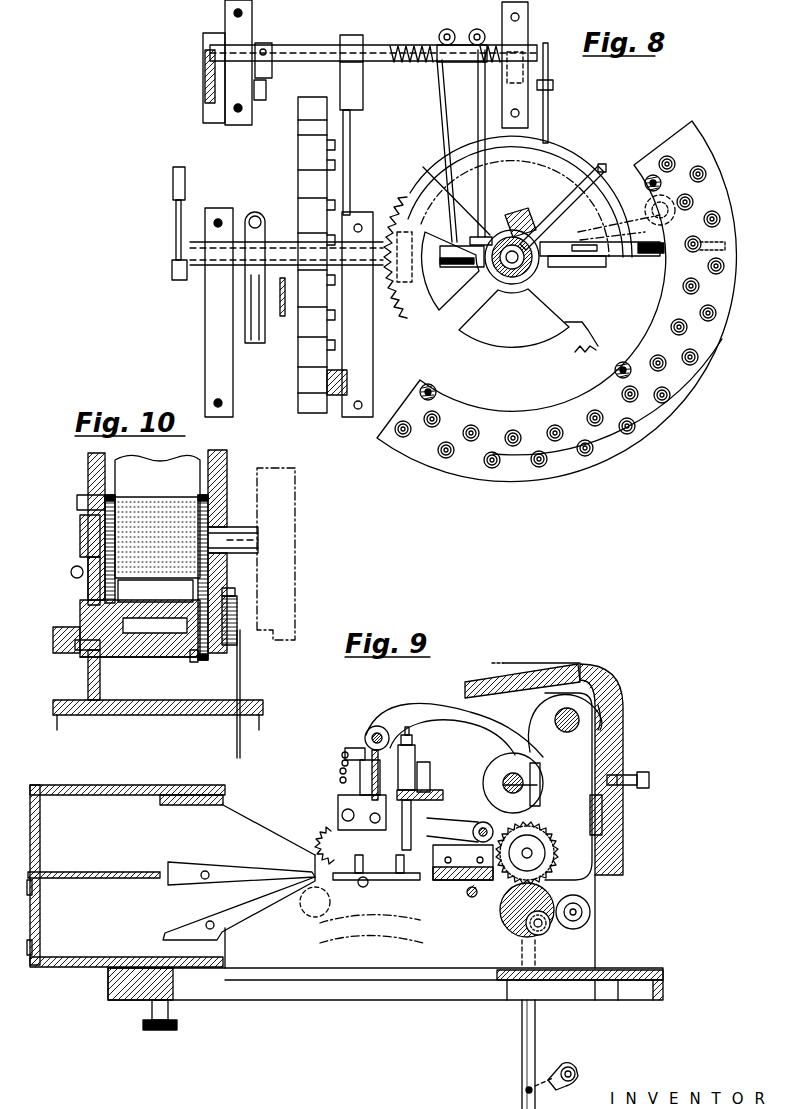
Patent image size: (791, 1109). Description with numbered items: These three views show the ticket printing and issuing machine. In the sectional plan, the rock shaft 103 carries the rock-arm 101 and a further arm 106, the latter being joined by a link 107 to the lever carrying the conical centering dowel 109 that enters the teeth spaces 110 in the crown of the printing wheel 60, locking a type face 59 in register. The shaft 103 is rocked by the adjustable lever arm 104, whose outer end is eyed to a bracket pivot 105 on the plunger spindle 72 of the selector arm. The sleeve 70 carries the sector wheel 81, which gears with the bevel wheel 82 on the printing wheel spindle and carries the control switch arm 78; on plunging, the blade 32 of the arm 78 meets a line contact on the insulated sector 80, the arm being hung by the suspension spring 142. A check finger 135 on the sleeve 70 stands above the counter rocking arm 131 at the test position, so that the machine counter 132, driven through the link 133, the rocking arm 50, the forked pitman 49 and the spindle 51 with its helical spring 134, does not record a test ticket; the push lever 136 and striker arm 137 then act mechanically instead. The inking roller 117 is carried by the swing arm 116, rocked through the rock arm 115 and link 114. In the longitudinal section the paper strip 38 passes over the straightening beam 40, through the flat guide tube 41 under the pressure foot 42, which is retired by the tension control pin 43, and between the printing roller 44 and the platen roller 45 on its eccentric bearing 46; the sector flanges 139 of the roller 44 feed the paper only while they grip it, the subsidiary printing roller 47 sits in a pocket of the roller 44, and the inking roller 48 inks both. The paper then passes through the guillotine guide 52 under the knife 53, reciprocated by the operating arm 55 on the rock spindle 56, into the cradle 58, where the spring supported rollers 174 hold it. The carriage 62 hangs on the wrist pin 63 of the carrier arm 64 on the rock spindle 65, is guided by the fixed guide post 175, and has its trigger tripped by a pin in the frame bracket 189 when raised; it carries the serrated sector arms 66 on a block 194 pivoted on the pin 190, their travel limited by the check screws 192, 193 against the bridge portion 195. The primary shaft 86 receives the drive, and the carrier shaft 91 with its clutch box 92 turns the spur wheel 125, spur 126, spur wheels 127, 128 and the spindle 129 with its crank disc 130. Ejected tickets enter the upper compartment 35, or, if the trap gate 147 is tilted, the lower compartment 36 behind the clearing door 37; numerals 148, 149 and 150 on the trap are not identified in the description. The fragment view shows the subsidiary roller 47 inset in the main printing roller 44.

In FIG. 8, the rock shaft 103 is at (305, 43).
In FIG. 8, the rocking arm 50 is at (272, 68).
In FIG. 9, the rocking arm 50 is at (556, 1084).
In FIG. 8, the forked pitman 49 is at (262, 94).
In FIG. 10, the forked pitman 49 is at (242, 660).
In FIG. 9, the forked pitman 49 is at (537, 1025).
In FIG. 8, the rock-arm 101 is at (207, 124).
In FIG. 8, the arm 106 is at (352, 86).
In FIG. 8, the link 107 is at (353, 175).
In FIG. 8, the helical spring 134 is at (408, 63).
In FIG. 8, the spindle 51 is at (472, 63).
In FIG. 9, the spindle 51 is at (580, 1073).
In FIG. 8, the machine counter 132 is at (498, 79).
In FIG. 8, the counter rocking arm 131 is at (549, 121).
In FIG. 8, the link 133 is at (550, 91).
In FIG. 8, the adjustable lever arm 104 is at (486, 160).
In FIG. 8, the type face 59 is at (300, 192).
In FIG. 8, the teeth spaces 110 is at (337, 157).
In FIG. 8, the conical centering dowel 109 is at (300, 341).
In FIG. 8, the printing wheel 60 is at (298, 380).
In FIG. 9, the printing wheel 60 is at (322, 938).
In FIG. 8, the link 114 is at (250, 283).
In FIG. 8, the rock arm 115 is at (262, 292).
In FIG. 8, the swing arm 116 is at (278, 298).
In FIG. 8, the push lever 136 is at (174, 199).
In FIG. 8, the striker arm 137 is at (178, 271).
In FIG. 8, the plunger spindle 72 is at (504, 289).
In FIG. 8, the bevel wheel 82 is at (395, 321).
In FIG. 8, the sleeve 70 is at (515, 238).
In FIG. 8, the bracket pivot 105 is at (463, 267).
In FIG. 8, the control switch arm 78 is at (616, 259).
In FIG. 8, the check finger 135 is at (604, 170).
In FIG. 8, the suspension spring 142 is at (601, 250).
In FIG. 8, the blade 32 is at (700, 259).
In FIG. 8, the sector wheel 81 is at (583, 331).
In FIG. 8, the insulated sector 80 is at (681, 394).
In FIG. 10, the spur wheel 128 is at (116, 488).
In FIG. 10, the platen roller 45 is at (165, 505).
In FIG. 9, the platen roller 45 is at (546, 820).
In FIG. 10, the spur wheel 125 is at (214, 509).
In FIG. 10, the carrier shaft 91 is at (245, 528).
In FIG. 10, the clutch box 92 is at (258, 542).
In FIG. 10, the sector flange edges 139 is at (195, 593).
In FIG. 10, the printing roller 44 is at (202, 599).
In FIG. 9, the printing roller 44 is at (500, 928).
In FIG. 10, the adjustable crank disc 130 is at (237, 603).
In FIG. 10, the spindle 129 is at (237, 614).
In FIG. 10, the spur wheel 127 is at (108, 660).
In FIG. 10, the subsidiary printing roller 47 is at (166, 660).
In FIG. 9, the subsidiary printing roller 47 is at (543, 938).
In FIG. 10, the spur 126 is at (200, 668).
In FIG. 9, the upper compartment 35 is at (126, 875).
In FIG. 9, the lower compartment 36 is at (127, 936).
In FIG. 9, the clearing door 37 is at (40, 917).
In FIG. 9, the edge 148 is at (269, 841).
In FIG. 9, the trap gate 147 is at (241, 864).
In FIG. 9, the pin 150 is at (205, 871).
In FIG. 9, the lever 149 is at (242, 910).
In FIG. 9, the inking roller 117 is at (385, 973).
In FIG. 9, the serrated edged sector arms 66 is at (312, 842).
In FIG. 9, the strip 38 is at (536, 661).
In FIG. 9, the straightening beam 40 is at (584, 803).
In FIG. 9, the flat guide tube 41 is at (624, 721).
In FIG. 9, the tension control pin 43 is at (640, 773).
In FIG. 9, the pressure foot 42 is at (603, 827).
In FIG. 9, the frame bracket 189 is at (430, 790).
In FIG. 9, the oscillating carrier arm 64 is at (422, 708).
In FIG. 9, the wrist pin 63 is at (366, 735).
In FIG. 9, the rock spindle 65 is at (542, 775).
In FIG. 9, the primary shaft 86 is at (554, 720).
In FIG. 9, the operating arm 55 is at (453, 817).
In FIG. 9, the reciprocating carriage 62 is at (333, 795).
In FIG. 9, the pin 190 is at (333, 810).
In FIG. 9, the bridge portion of the carriage 195 is at (350, 756).
In FIG. 9, the limit check screw 192 is at (344, 762).
In FIG. 9, the block 194 is at (341, 769).
In FIG. 9, the limit check screw 193 is at (341, 779).
In FIG. 9, the eccentric bearing 46 is at (553, 836).
In FIG. 9, the rock spindle 56 is at (463, 862).
In FIG. 9, the guillotine knife 53 is at (427, 882).
In FIG. 9, the cradle 58 is at (337, 883).
In FIG. 9, the guillotine guide 52 is at (466, 908).
In FIG. 9, the inking roller 48 is at (594, 898).
In FIG. 9, the spring supported rollers 174 is at (358, 878).
In FIG. 9, the fixed guide post 175 is at (400, 878).